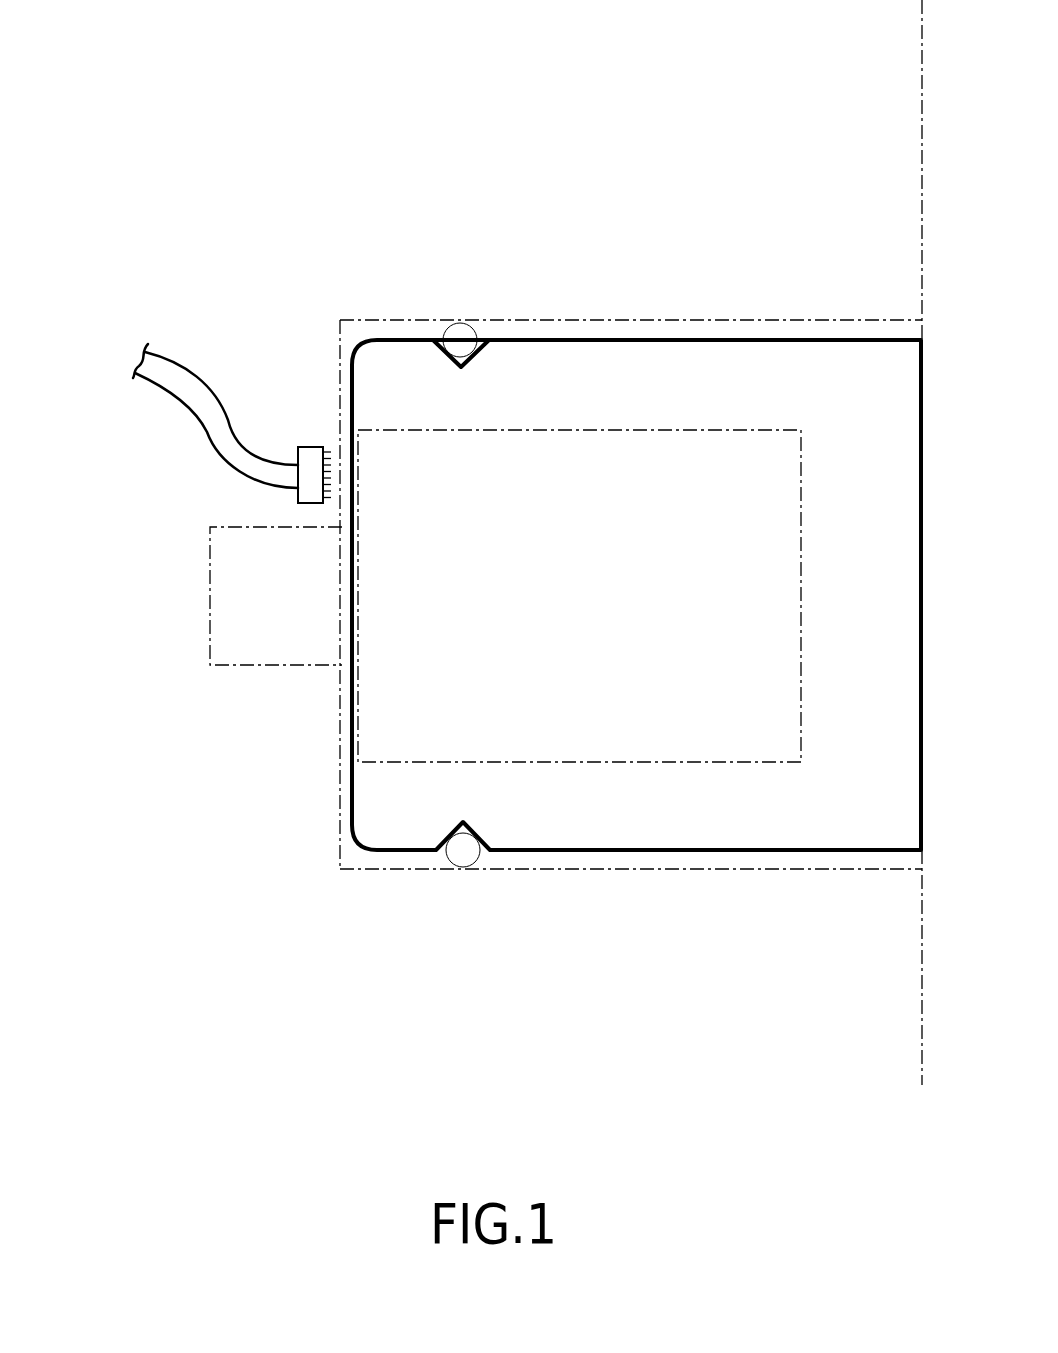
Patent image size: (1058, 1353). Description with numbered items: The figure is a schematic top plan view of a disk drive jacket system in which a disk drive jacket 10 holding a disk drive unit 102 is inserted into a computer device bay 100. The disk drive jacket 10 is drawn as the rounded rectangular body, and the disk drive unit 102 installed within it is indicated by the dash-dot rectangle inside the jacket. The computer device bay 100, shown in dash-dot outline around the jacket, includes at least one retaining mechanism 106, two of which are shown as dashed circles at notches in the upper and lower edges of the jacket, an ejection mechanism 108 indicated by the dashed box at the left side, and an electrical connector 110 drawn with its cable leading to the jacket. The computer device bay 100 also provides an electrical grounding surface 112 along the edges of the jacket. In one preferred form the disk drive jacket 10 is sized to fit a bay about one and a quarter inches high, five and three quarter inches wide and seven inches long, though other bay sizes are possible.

The computer device bay 100 is at (368, 252).
The disk drive jacket 10 is at (675, 368).
The disk drive unit 102 is at (717, 750).
The retaining mechanism 106 is at (461, 338).
The ejection mechanism 108 is at (226, 612).
The electrical connector 110 is at (180, 395).
The electrical grounding surface 112 is at (640, 322).